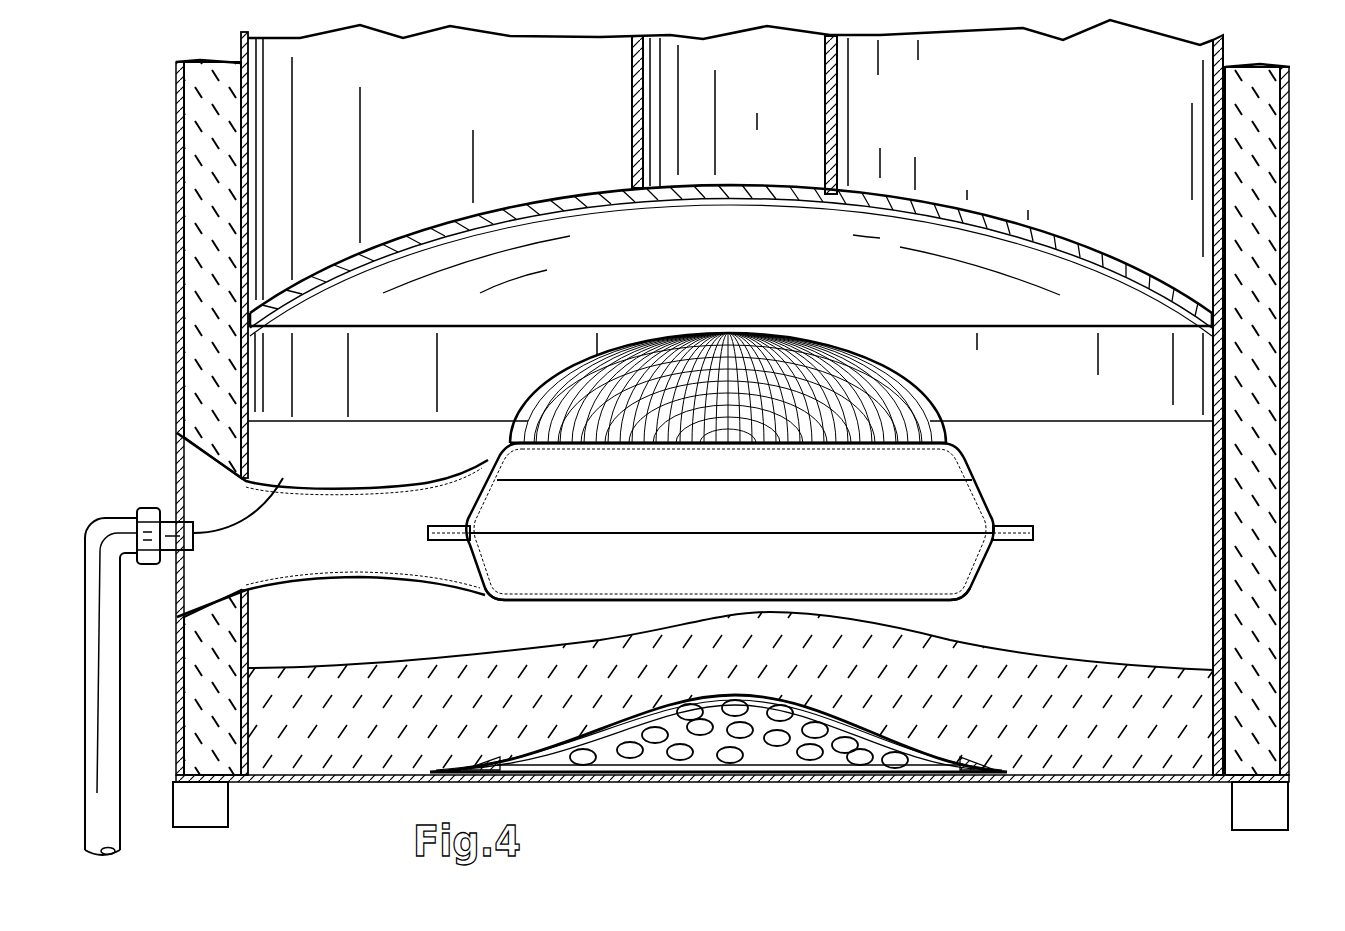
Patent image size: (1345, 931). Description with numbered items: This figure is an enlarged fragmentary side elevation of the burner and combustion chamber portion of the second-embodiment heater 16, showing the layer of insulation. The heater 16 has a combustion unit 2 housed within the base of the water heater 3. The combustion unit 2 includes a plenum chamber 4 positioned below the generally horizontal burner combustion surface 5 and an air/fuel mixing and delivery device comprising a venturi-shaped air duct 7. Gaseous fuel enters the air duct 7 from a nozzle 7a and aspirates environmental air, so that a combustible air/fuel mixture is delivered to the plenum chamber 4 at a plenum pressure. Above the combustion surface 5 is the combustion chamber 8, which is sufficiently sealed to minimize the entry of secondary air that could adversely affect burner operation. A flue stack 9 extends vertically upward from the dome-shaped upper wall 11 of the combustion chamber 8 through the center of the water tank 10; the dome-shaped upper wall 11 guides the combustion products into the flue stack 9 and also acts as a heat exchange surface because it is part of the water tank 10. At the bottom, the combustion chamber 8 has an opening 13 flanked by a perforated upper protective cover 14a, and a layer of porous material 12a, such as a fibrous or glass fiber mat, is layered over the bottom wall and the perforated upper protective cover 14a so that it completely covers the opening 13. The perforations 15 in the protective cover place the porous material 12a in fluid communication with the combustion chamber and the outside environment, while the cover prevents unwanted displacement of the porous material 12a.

The combustion unit 2 is at (1005, 478).
The water heater 3 is at (1291, 202).
The plenum chamber 4 is at (950, 568).
The combustion surface 5 is at (898, 394).
The air duct 7 is at (318, 517).
The nozzle 7a is at (283, 478).
The combustion chamber 8 is at (783, 263).
The flue stack 9 is at (783, 115).
The water tank 10 is at (1056, 114).
The dome-shaped upper wall 11 is at (1045, 237).
The layer of porous material 12a is at (380, 752).
The opening 13 is at (628, 777).
The perforated upper protective cover 14a is at (853, 713).
The perforations 15 is at (733, 752).
The heater 16 is at (1178, 258).